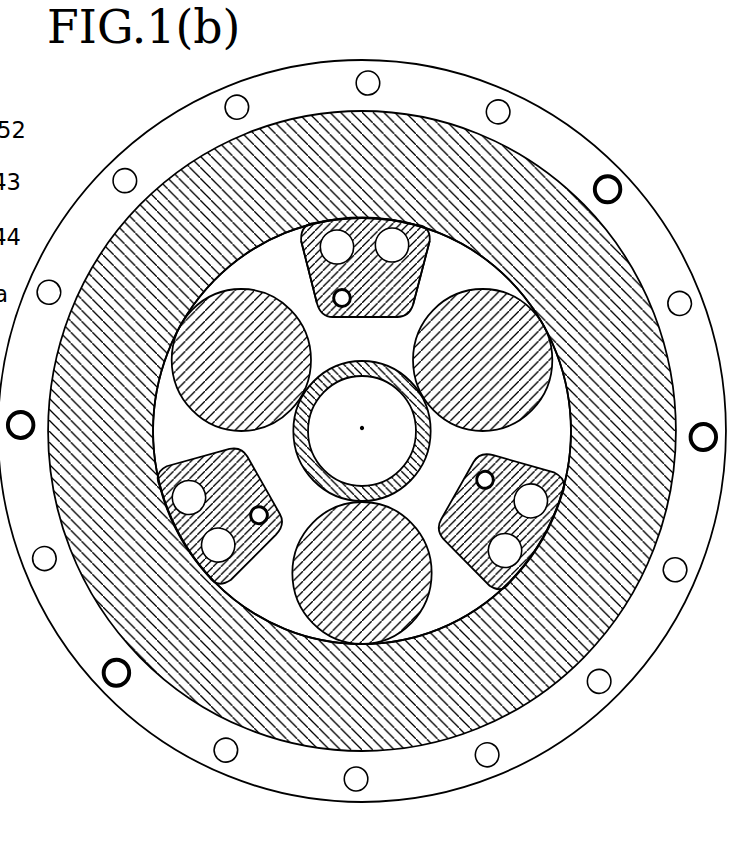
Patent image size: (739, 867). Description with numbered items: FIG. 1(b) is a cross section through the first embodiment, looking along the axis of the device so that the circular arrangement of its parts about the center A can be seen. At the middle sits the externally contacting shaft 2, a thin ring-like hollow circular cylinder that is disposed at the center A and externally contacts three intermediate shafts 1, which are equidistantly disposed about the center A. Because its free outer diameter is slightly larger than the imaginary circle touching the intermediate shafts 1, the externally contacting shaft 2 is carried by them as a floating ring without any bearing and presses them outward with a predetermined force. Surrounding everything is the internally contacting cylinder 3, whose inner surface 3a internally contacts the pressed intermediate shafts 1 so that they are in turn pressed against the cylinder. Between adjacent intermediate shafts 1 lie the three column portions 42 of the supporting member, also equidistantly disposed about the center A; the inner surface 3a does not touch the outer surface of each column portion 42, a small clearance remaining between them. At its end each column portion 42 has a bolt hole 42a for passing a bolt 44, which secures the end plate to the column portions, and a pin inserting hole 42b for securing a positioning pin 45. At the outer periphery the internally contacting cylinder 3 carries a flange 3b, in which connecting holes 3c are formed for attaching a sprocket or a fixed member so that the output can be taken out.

The intermediate shaft 1 is at (376, 573).
The externally contacting shaft 2 is at (361, 431).
The center A is at (378, 441).
The internally contacting cylinder 3 is at (178, 221).
The inner surface 3a is at (361, 431).
The flange 3b is at (285, 204).
The connecting hole 3c is at (640, 173).
The column portion 42 is at (370, 288).
The bolt hole 42a is at (452, 272).
The pin inserting hole 42b is at (283, 272).
The bolt 44 is at (306, 247).
The positioning pin 45 is at (334, 324).